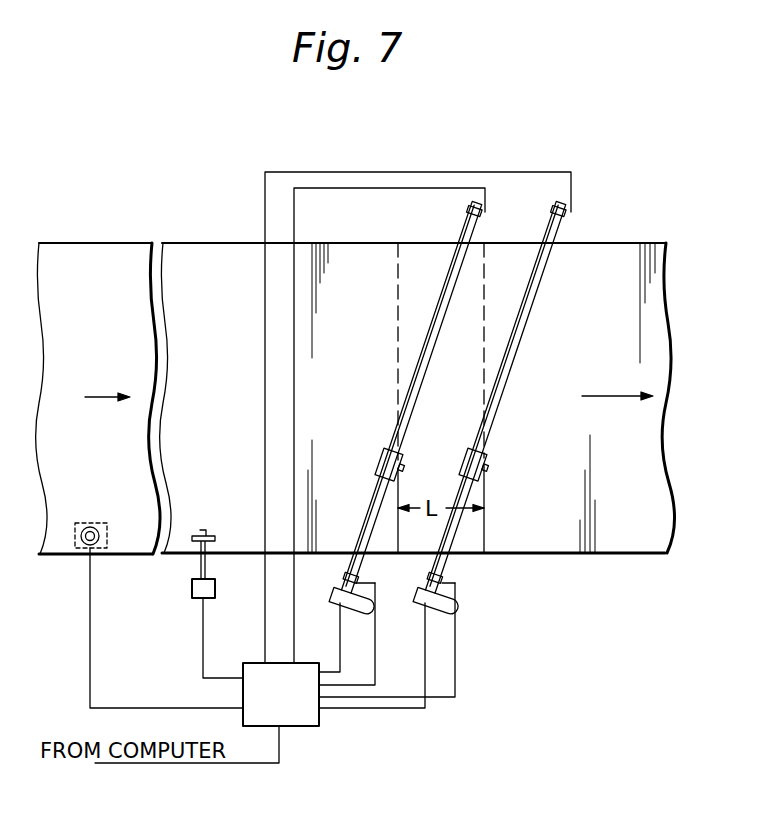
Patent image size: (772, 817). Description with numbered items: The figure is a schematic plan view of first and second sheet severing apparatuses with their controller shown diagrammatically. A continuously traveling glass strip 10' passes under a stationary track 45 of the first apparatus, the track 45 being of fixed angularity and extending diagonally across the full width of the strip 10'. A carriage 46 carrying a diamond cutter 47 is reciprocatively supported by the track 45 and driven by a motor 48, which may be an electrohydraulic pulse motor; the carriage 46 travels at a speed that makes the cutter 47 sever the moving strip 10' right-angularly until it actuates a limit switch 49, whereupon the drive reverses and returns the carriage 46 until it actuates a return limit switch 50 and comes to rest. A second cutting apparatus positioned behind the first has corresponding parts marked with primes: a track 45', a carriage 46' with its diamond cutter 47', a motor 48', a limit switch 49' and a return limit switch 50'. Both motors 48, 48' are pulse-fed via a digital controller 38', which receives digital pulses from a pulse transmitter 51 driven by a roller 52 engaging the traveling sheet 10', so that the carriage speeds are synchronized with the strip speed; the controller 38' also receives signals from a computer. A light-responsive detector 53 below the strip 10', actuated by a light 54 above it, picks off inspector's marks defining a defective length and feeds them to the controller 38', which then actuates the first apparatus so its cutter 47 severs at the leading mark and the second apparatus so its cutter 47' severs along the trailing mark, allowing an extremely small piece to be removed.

The glass strip 10' is at (355, 382).
The digital controller 38' is at (286, 715).
The track 45 is at (411, 397).
The track 45' is at (506, 397).
The carriage 46 is at (366, 467).
The carriage 46' is at (454, 467).
The diamond cutter 47 is at (417, 451).
The diamond cutter 47' is at (511, 455).
The motor 48 is at (338, 613).
The motor 48' is at (423, 618).
The limit switch 49 is at (499, 217).
The limit switch 49' is at (588, 210).
The return limit switch 50 is at (371, 572).
The return limit switch 50' is at (463, 572).
The pulse transmitter 51 is at (192, 597).
The roller 52 is at (212, 538).
The detector 53 is at (80, 523).
The light 54 is at (97, 527).